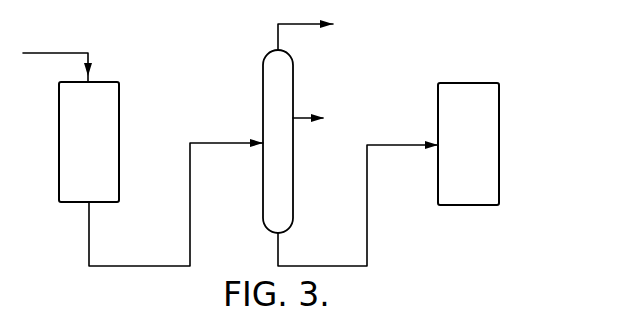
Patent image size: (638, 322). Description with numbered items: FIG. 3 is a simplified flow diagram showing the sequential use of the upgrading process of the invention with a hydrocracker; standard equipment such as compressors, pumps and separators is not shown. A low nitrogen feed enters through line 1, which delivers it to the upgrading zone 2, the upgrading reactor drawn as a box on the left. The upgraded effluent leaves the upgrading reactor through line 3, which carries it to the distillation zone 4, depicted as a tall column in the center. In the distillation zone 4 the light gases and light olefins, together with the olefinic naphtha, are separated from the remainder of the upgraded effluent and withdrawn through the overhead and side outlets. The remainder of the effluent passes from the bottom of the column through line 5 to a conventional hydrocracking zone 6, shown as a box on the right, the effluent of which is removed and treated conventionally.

The line 1 is at (45, 53).
The upgrading zone 2 is at (120, 101).
The line 3 is at (146, 266).
The distillation zone 4 is at (295, 85).
The line 5 is at (321, 266).
The hydrocracking zone 6 is at (500, 103).